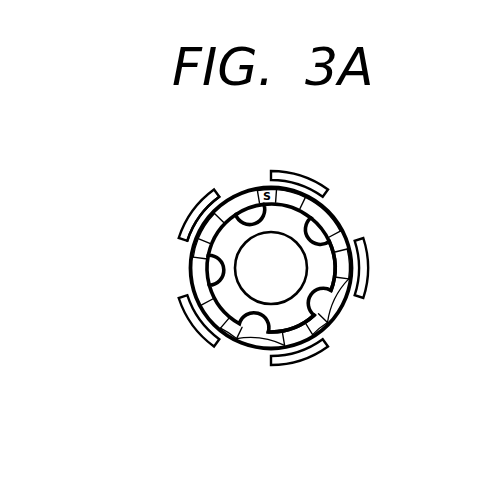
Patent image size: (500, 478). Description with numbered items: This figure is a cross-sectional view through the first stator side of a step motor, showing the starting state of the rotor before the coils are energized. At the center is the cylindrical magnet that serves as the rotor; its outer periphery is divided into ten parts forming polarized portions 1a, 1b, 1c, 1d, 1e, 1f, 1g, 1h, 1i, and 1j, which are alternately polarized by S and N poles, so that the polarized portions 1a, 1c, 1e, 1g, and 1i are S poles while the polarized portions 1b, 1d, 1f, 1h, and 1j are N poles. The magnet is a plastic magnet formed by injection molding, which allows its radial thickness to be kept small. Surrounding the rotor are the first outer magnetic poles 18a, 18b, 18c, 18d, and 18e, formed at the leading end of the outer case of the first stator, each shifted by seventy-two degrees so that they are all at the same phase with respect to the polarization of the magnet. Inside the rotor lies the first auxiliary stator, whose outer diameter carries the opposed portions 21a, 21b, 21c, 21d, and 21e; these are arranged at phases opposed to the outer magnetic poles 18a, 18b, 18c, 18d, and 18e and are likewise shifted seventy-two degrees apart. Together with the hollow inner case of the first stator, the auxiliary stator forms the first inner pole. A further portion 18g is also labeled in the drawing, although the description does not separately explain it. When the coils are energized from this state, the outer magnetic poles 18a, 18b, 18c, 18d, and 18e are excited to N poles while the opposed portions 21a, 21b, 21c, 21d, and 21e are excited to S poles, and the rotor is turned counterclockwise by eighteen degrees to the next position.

The polarized portion 1a is at (290, 198).
The polarized portion 1b is at (262, 192).
The polarized portion 1c is at (253, 258).
The polarized portion 1d is at (193, 260).
The polarized portion 1e is at (224, 333).
The polarized portion 1f is at (254, 348).
The polarized portion 1g is at (330, 330).
The polarized portion 1h is at (347, 307).
The polarized portion 1i is at (360, 251).
The polarized portion 1j is at (336, 217).
The first outer magnetic pole 18a is at (311, 184).
The first outer magnetic pole 18b is at (198, 203).
The first outer magnetic pole 18c is at (192, 327).
The first outer magnetic pole 18d is at (307, 356).
The first outer magnetic pole 18e is at (363, 278).
The yoke piece 18g is at (192, 212).
The opposed portion 21a is at (327, 210).
The opposed portion 21b is at (233, 198).
The opposed portion 21c is at (196, 277).
The opposed portion 21d is at (320, 335).
The opposed portion 21e is at (341, 234).